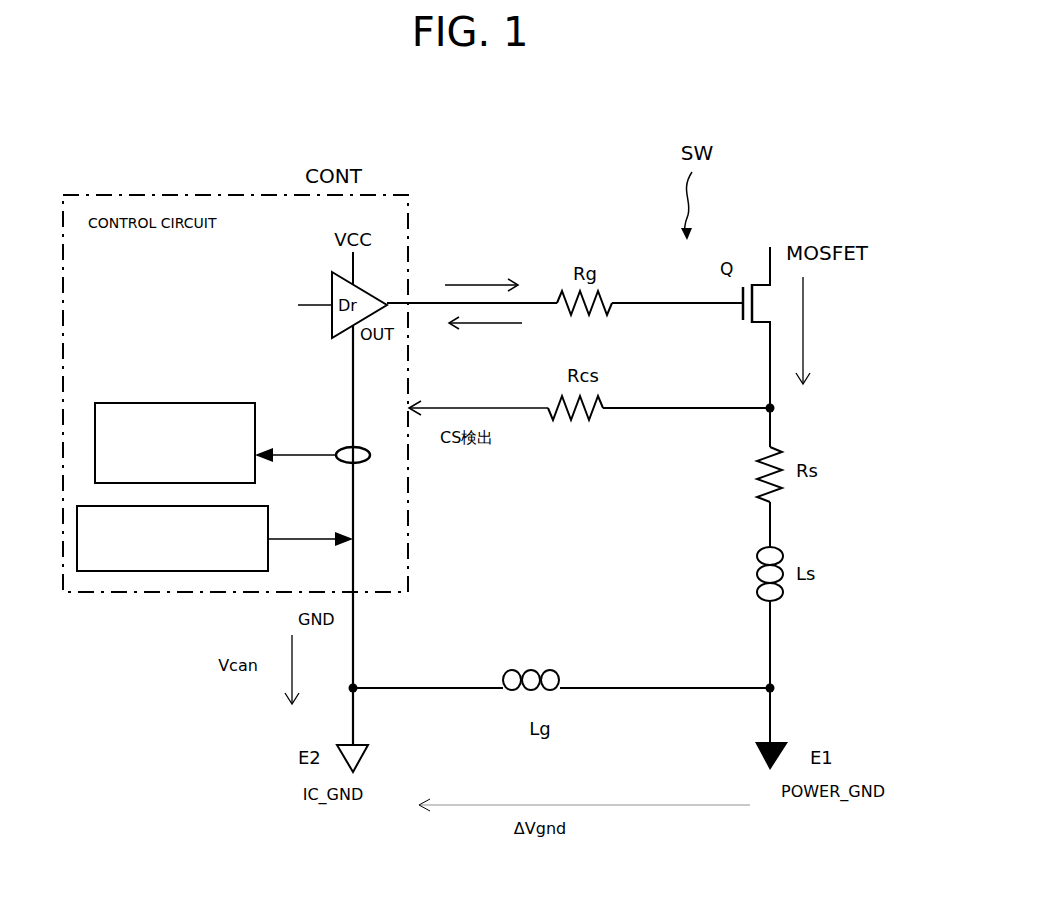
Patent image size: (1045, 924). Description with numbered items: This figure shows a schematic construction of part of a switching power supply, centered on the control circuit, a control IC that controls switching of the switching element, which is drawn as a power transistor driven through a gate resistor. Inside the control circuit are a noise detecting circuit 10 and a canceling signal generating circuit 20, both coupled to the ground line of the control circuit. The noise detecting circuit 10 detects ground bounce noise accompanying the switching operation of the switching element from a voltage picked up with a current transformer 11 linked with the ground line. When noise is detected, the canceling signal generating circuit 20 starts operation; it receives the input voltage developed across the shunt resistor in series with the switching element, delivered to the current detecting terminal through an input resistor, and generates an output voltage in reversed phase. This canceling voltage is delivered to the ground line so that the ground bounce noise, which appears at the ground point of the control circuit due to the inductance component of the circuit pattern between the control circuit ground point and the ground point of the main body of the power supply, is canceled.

The noise detecting circuit 10 is at (173, 403).
The current transformer 11 is at (345, 448).
The canceling signal generating circuit 20 is at (178, 571).